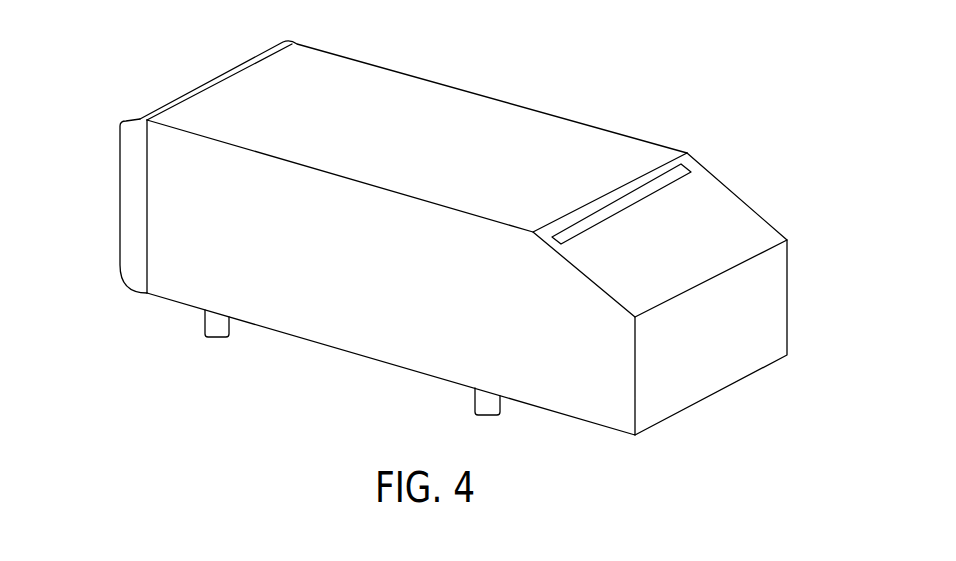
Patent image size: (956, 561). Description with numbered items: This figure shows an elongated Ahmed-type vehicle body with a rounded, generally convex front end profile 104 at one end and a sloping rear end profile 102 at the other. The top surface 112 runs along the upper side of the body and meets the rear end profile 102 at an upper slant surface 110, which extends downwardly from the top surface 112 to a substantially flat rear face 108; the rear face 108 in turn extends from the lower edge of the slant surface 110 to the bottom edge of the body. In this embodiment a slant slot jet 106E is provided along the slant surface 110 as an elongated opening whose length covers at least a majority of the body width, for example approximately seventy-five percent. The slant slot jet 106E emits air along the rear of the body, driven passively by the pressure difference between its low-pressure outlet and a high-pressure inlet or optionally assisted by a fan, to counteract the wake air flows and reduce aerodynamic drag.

The rear end profile 102 is at (512, 390).
The front end profile 104 is at (120, 190).
The slant slot jet 106E is at (682, 163).
The rear face 108 is at (713, 380).
The slant surface 110 is at (745, 220).
The top surface 112 is at (436, 92).